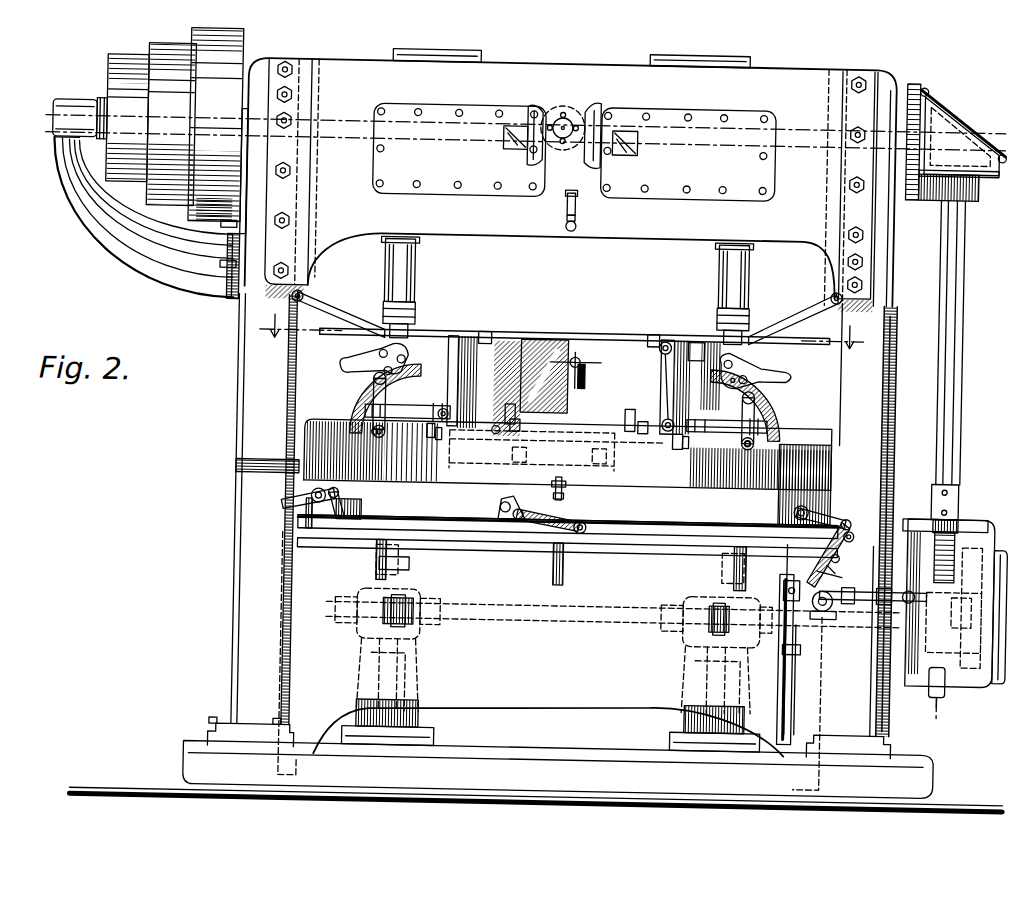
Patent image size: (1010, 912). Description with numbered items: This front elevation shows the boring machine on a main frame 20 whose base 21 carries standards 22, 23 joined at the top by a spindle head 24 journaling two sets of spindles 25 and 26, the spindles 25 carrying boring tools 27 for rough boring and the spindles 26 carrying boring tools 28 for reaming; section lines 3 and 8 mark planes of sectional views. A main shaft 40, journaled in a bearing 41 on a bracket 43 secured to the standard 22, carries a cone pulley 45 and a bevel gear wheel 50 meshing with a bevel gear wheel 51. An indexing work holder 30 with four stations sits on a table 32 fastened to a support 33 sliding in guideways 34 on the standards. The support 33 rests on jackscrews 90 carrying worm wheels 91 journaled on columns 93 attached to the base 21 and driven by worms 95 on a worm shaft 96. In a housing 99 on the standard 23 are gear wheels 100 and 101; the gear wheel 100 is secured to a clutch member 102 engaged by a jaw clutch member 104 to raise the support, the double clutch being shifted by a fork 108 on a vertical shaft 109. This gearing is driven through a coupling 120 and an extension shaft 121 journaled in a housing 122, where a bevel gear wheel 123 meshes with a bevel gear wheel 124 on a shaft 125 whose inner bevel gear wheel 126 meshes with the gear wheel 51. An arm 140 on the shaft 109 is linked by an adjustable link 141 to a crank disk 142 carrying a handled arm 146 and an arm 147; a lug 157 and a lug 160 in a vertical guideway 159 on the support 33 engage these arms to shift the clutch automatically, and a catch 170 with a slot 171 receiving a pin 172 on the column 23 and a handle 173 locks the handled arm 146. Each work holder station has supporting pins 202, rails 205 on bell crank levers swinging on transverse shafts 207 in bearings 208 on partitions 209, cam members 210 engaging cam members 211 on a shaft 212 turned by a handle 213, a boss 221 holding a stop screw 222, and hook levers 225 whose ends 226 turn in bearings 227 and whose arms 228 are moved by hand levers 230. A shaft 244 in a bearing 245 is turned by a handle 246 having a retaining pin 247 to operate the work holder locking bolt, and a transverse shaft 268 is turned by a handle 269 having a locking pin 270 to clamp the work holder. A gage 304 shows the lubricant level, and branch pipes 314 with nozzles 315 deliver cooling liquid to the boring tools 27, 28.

The section line 3- 3 is at (565, 332).
The section line 8- 8 is at (953, 454).
The main frame 20 is at (247, 656).
The base 21 is at (602, 759).
The standard 22 is at (240, 410).
The standard 23 is at (892, 399).
The spindle head 24 is at (585, 70).
The spindles 25 is at (412, 280).
The spindles 26 is at (715, 280).
The boring tools 27 is at (413, 314).
The boring tools 28 is at (718, 309).
The indexing work holder 30 is at (608, 336).
The table 32 is at (449, 499).
The support or bed 33 is at (548, 700).
The guideways 34 is at (290, 661).
The main shaft 40 is at (340, 133).
The bearing 41 is at (46, 129).
The bracket 43 is at (97, 260).
The step or cone pulley 45 is at (130, 62).
The bevel gear wheel 50 is at (530, 109).
The bevel gear wheel 51 is at (556, 110).
The jackscrews 90 is at (420, 650).
The worm wheels 91 is at (413, 598).
The columns 93 is at (425, 720).
The worms 95 is at (374, 637).
The worm shaft 96 is at (584, 622).
The housing 99 is at (977, 513).
The gear wheel 100 is at (981, 667).
The gear wheel 101 is at (874, 644).
The clutch member 102 is at (961, 592).
The clutch member 104 is at (948, 687).
The shifting fork 108 is at (936, 664).
The shaft 109 is at (942, 513).
The coupling 120 is at (936, 488).
The extension shaft 121 is at (944, 333).
The housing 122 is at (924, 194).
The bevel gear wheel 123 is at (959, 141).
The bevel gear wheel 124 is at (932, 102).
The shaft 125 is at (800, 138).
The bevel gear wheel 126 is at (592, 110).
The arm 140 is at (937, 552).
The adjustable link 141 is at (854, 586).
The crank disk 142 is at (832, 606).
The handled arm 146 is at (852, 562).
The arm 147 is at (829, 619).
The lug 157 is at (791, 586).
The vertical guideway 159 is at (791, 676).
The lug 160 is at (810, 643).
The catch 170 is at (850, 529).
The slot 171 is at (847, 549).
The pin 172 is at (847, 554).
The handle 173 is at (854, 537).
The pins 202 is at (511, 419).
The rails 205 is at (512, 421).
The transverse shafts 207 is at (404, 415).
The bearings 208 is at (467, 420).
The partitions 209 is at (438, 347).
The cam members 210 is at (435, 443).
The cam members 211 is at (428, 443).
The shaft 212 is at (375, 438).
The handle 213 is at (369, 400).
The boss 221 is at (584, 369).
The stop screw 222 is at (571, 352).
The hook levers 225 is at (486, 336).
The ends 226 is at (664, 338).
The bearings 227 is at (659, 345).
The arms 228 is at (686, 343).
The hand levers 230 is at (364, 369).
The shaft 244 is at (524, 529).
The bearing 245 is at (506, 498).
The handle 246 is at (572, 520).
The retaining pin 247 is at (506, 510).
The transverse shaft 268 is at (297, 526).
The handle 269 is at (290, 518).
The locking pin 270 is at (354, 524).
The gage 304 is at (572, 207).
The branch pipes 314 is at (302, 300).
The nozzles 315 is at (353, 321).